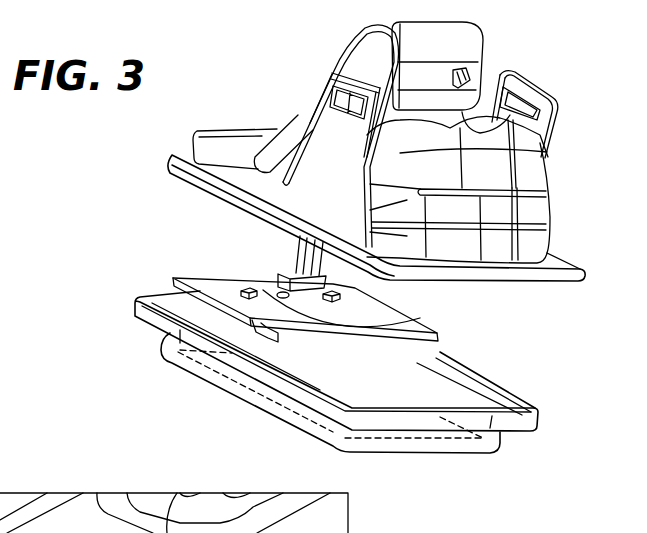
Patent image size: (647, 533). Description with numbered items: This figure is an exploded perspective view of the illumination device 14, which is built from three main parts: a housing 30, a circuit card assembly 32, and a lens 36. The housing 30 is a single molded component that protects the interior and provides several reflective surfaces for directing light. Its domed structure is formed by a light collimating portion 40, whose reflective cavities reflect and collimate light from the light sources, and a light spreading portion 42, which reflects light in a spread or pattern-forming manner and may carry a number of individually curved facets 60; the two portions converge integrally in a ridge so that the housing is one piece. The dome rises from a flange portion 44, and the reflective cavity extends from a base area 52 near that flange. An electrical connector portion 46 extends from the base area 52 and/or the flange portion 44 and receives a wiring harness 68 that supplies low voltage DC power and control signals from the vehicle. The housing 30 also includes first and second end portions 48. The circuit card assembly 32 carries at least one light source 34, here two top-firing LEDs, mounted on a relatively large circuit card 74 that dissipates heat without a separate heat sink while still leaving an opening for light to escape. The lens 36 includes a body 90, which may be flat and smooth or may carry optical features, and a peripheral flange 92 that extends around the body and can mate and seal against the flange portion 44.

The illumination device 14 is at (567, 453).
The housing 30 is at (258, 130).
The circuit card assembly 32 is at (208, 279).
The light source 34 is at (402, 318).
The lens 36 is at (319, 443).
The light collimating portion 40 is at (293, 128).
The light spreading portion 42 is at (552, 171).
The flange portion 44 is at (545, 288).
The electrical connector portion 46 is at (468, 40).
The first and second end portions 48 is at (262, 203).
The base area 52 is at (247, 133).
The individually curved facets 60 is at (392, 235).
The wiring harness 68 is at (298, 244).
The circuit card 74 is at (268, 290).
The body 90 is at (215, 390).
The peripheral flange 92 is at (145, 328).